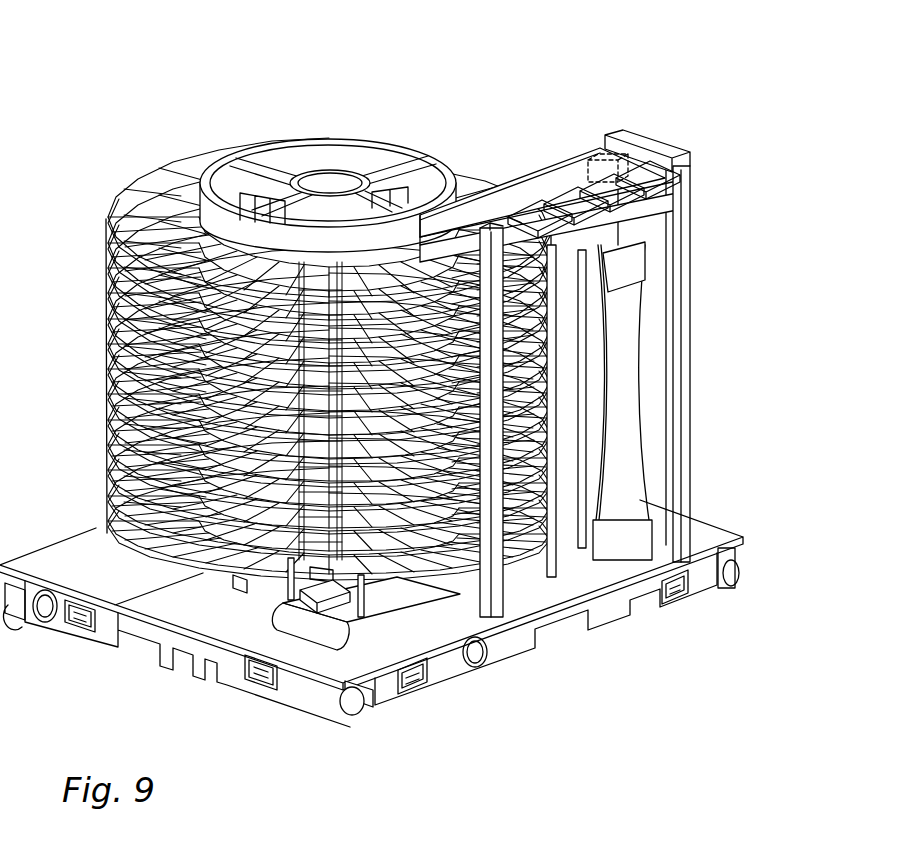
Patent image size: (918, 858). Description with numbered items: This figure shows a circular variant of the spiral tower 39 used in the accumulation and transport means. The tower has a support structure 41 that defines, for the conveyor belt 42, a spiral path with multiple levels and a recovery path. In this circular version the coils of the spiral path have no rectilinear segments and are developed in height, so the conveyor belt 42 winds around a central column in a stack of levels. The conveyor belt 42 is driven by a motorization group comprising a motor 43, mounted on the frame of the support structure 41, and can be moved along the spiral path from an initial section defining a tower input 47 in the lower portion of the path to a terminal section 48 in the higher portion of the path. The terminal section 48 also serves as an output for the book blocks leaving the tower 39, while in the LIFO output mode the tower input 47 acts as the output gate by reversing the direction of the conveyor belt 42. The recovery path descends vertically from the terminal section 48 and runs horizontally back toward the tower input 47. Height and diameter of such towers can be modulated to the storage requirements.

The spiral tower 39 is at (533, 92).
The support structure 41 is at (294, 157).
The conveyor belt 42 is at (93, 222).
The motor 43 is at (584, 153).
The tower input 47 is at (257, 612).
The terminal section 48 is at (688, 135).